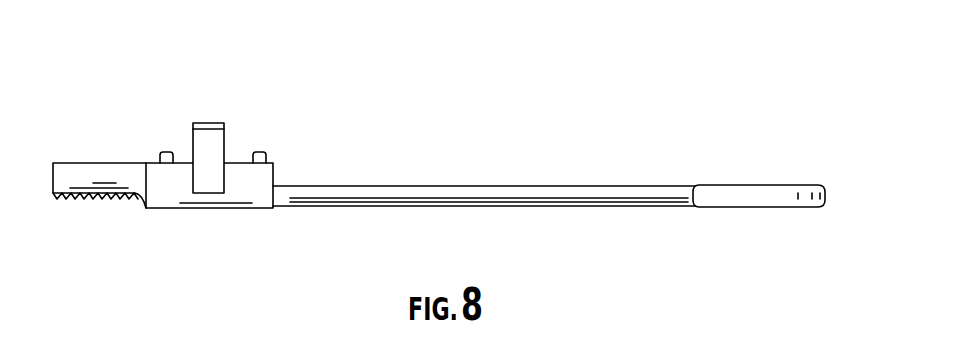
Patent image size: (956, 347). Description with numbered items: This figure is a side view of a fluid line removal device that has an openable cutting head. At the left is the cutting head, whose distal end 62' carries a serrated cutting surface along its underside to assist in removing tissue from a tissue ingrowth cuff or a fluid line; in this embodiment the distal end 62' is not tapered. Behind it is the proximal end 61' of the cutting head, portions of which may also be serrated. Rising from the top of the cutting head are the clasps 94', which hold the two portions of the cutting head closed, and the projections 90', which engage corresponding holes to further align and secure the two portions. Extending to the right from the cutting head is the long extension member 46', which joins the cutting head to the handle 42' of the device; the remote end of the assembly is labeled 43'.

The handle 42' is at (461, 178).
The distal tip 43' is at (782, 223).
The extension member 46' is at (484, 162).
The proximal end 61' is at (224, 217).
The distal end 62' is at (99, 149).
The projections 90' is at (251, 125).
The clasps 94' is at (236, 120).